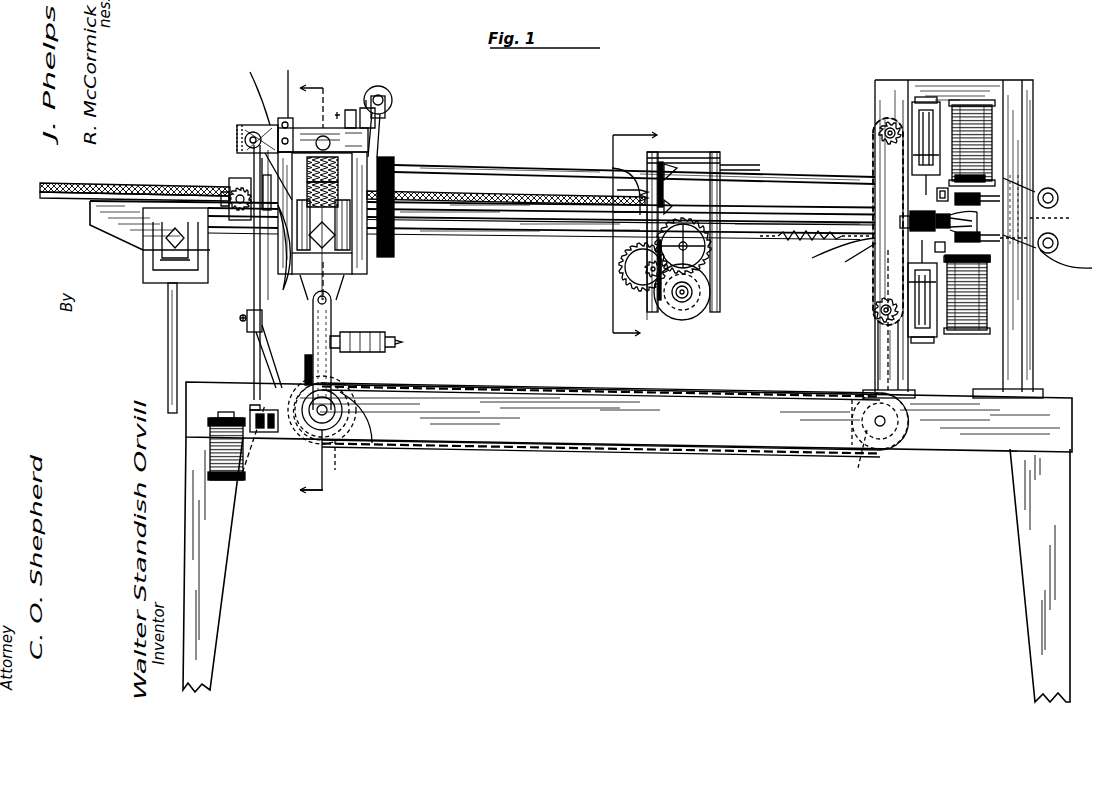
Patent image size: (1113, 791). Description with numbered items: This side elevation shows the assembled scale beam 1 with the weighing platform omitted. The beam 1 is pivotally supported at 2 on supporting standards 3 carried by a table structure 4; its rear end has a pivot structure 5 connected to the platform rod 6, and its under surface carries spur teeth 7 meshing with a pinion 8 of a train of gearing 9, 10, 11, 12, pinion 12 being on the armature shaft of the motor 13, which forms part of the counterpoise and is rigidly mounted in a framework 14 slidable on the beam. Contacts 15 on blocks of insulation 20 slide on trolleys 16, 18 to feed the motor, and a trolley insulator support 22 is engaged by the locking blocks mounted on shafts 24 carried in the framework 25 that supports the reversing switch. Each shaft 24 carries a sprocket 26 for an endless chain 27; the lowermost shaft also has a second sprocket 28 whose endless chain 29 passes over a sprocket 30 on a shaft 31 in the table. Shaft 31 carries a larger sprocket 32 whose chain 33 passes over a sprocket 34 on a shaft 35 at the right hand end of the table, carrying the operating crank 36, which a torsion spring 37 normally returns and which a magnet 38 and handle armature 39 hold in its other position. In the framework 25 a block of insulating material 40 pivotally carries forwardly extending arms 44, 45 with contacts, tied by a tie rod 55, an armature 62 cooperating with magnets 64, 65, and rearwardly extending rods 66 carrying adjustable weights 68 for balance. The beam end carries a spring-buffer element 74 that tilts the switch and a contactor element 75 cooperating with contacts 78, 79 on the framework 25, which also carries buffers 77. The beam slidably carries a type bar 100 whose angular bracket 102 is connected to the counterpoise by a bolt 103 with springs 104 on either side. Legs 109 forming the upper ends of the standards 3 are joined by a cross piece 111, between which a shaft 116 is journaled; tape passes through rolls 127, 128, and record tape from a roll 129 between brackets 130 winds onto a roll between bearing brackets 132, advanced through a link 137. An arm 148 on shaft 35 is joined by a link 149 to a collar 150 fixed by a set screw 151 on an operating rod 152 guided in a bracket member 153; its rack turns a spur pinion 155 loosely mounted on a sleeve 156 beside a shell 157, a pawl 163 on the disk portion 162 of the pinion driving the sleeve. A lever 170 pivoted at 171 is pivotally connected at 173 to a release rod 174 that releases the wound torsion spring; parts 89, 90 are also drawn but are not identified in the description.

The scale beam 1 is at (570, 226).
The pivot 2 is at (360, 291).
The supporting standards 3 is at (334, 313).
The table structure 4 is at (474, 428).
The pivot structure 5 is at (170, 239).
The platform rod 6 is at (170, 351).
The spur teeth 7 is at (790, 240).
The pinion 8 is at (741, 186).
The gear of train of gearing 9 is at (705, 251).
The gear of train of gearing 10 is at (662, 272).
The gear of train of gearing 11 is at (638, 290).
The pinion 12 is at (726, 299).
The motor 13 is at (690, 306).
The general framework 14 is at (724, 169).
The contacts 15 is at (676, 168).
The trolley 16 is at (449, 167).
The trolley 18 is at (543, 236).
The blocks of insulation 20 is at (658, 168).
The trolley insulator support 22 is at (393, 160).
The shafts 24 is at (873, 133).
The framework 25 is at (895, 79).
The sprocket 26 is at (877, 124).
The endless chain 27 is at (840, 256).
The second sprocket 28 is at (884, 320).
The endless chain 29 is at (872, 351).
The sprocket 30 is at (860, 419).
The shaft 31 is at (882, 428).
The larger sprocket 32 is at (873, 444).
The chain 33 is at (676, 458).
The sprocket 34 is at (326, 464).
The shaft 35 is at (330, 406).
The operating crank 36 is at (358, 352).
The torsion spring 37 is at (372, 421).
The magnet 38 is at (215, 460).
The handle armature 39 is at (308, 355).
The block of insulating material 40 is at (1065, 221).
The forwardly extending arm 44 is at (985, 194).
The forwardly extending arm 45 is at (985, 242).
The tie rod 55 is at (1058, 246).
The metallic armature 62 is at (1076, 265).
The magnet 64 is at (980, 131).
The magnet 65 is at (985, 296).
The rearwardly extending rod 66 is at (1040, 189).
The weight 68 is at (1058, 196).
The spring-buffer element 74 is at (978, 214).
The contactor element 75 is at (903, 228).
The buffers 77 is at (930, 126).
The electrical contact 78 is at (937, 196).
The electrical contact 79 is at (856, 259).
The switch 89 is at (264, 412).
The switch lever 90 is at (252, 409).
The type bar 100 is at (513, 204).
The angular bracket 102 is at (607, 186).
The bolt 103 is at (635, 190).
The springs 104 is at (632, 266).
The vertically extending legs 109 is at (278, 261).
The cross piece 111 is at (348, 110).
The shaft 116 is at (321, 136).
The roll 127 is at (323, 194).
The roll 128 is at (323, 169).
The roll 129 is at (390, 97).
The brackets 130 is at (365, 106).
The bearing brackets 132 is at (284, 118).
The link 137 is at (250, 132).
The outwardly extending arm 148 is at (268, 442).
The link 149 is at (272, 369).
The collar 150 is at (250, 334).
The set screw 151 is at (241, 320).
The operating rod 152 is at (255, 293).
The bracket member 153 is at (263, 182).
The spur pinion 155 is at (296, 242).
The sleeve 156 is at (262, 283).
The shell 157 is at (229, 190).
The disk portion 162 is at (229, 196).
The pawl 163 is at (268, 165).
The arm 170 is at (249, 92).
The pivot 171 is at (288, 85).
The pivotal connection 173 is at (240, 127).
The release rod 174 is at (237, 131).